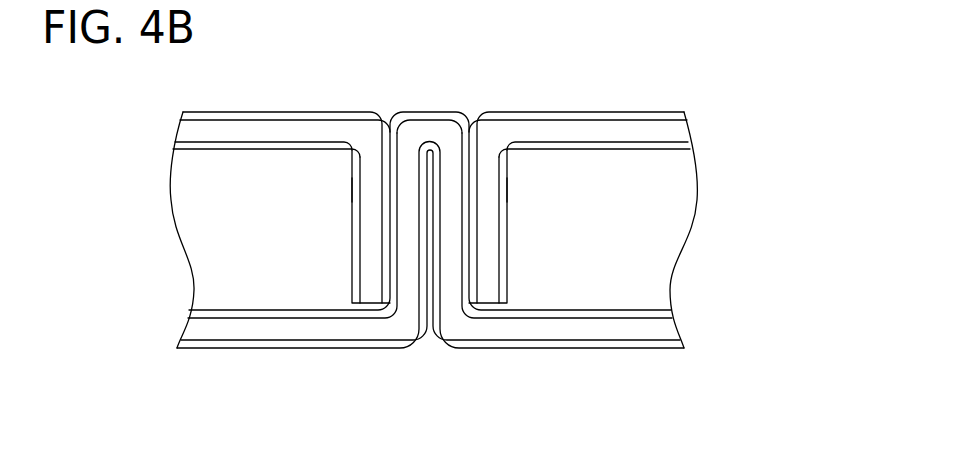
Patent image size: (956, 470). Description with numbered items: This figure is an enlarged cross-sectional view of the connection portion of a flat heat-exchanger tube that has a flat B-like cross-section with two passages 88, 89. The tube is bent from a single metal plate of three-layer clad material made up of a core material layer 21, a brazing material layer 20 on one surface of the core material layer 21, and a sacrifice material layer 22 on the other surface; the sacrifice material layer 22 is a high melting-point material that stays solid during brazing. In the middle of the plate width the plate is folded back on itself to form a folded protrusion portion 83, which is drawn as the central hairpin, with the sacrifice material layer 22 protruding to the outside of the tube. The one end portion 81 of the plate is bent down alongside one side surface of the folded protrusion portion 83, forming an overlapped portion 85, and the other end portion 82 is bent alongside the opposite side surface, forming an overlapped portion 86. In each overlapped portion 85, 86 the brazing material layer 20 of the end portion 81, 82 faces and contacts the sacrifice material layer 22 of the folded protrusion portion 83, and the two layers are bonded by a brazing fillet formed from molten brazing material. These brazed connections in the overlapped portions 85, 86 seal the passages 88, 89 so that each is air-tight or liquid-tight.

The brazing material layer 20 is at (184, 114).
The core material layer 21 is at (186, 126).
The sacrifice material layer 22 is at (178, 144).
The one end portion 81 is at (490, 236).
The other end portion 82 is at (372, 236).
The folded protrusion portion 83 is at (455, 150).
The overlapped portion 85 is at (517, 190).
The overlapped portion 86 is at (345, 190).
The passage 88 is at (665, 229).
The passage 89 is at (215, 229).